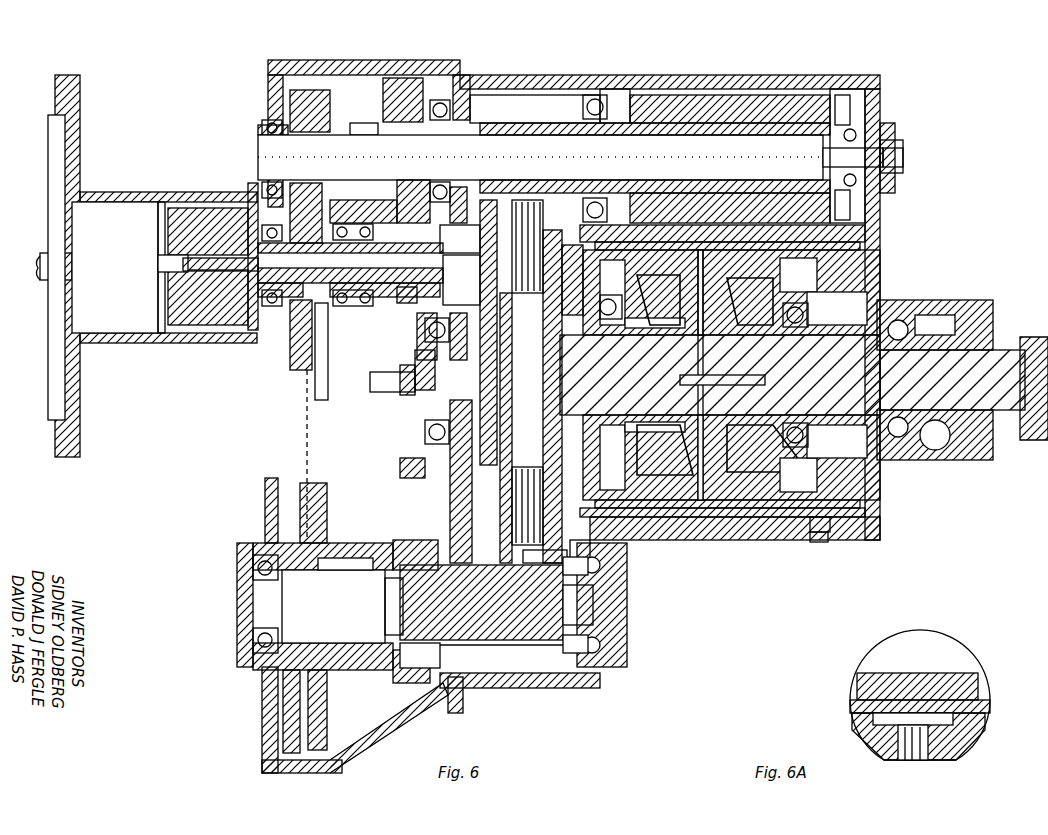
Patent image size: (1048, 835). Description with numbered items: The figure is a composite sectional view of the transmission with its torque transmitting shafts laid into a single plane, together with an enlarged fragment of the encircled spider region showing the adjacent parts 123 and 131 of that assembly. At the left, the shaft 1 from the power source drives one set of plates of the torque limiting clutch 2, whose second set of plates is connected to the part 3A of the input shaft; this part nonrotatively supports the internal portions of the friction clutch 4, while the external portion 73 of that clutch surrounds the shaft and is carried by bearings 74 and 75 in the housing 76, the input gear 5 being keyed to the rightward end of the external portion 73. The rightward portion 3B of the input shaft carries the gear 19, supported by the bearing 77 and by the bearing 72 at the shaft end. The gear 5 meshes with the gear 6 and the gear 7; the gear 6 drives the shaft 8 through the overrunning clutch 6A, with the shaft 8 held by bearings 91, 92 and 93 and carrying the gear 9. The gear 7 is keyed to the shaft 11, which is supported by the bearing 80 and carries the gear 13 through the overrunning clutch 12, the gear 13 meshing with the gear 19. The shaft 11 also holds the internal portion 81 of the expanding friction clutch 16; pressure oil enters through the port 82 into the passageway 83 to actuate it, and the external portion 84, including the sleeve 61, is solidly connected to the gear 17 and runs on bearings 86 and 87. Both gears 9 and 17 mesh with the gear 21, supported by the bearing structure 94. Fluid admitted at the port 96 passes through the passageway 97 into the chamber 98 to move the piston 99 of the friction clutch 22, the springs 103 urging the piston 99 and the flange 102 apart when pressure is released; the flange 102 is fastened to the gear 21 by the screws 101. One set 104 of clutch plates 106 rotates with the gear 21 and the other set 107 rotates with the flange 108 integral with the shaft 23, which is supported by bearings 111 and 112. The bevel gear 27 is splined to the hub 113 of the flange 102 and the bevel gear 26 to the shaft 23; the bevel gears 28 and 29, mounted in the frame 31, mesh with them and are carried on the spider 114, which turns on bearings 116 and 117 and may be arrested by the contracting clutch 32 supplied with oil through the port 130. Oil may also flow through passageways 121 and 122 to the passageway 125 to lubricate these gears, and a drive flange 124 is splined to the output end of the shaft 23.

In FIG. 6, the shaft 1 is at (47, 257).
In FIG. 6, the torque limiting clutch 2 is at (115, 267).
In FIG. 6, the part of the shaft 3 3A is at (160, 259).
In FIG. 6, the friction clutch 4 is at (203, 334).
In FIG. 6, the input gear 5 is at (350, 276).
In FIG. 6, the gear 6 is at (285, 502).
In FIG. 6, the overrunning clutch 6A is at (344, 558).
In FIG. 6, the gear 7 is at (298, 90).
In FIG. 6, the shaft 8 is at (370, 636).
In FIG. 6, the gear 9 is at (510, 643).
In FIG. 6, the shaft 11 is at (257, 152).
In FIG. 6, the overrunning clutch 12 is at (360, 123).
In FIG. 6, the gear 13 is at (390, 81).
In FIG. 6, the friction clutch 16 is at (672, 92).
In FIG. 6, the gear 17 is at (527, 120).
In FIG. 6, the gear 19 is at (268, 120).
In FIG. 6, the gear 21 is at (502, 498).
In FIG. 6, the friction clutch 22 is at (481, 602).
In FIG. 6, the shaft 23 is at (575, 378).
In FIG. 6, the bevel gear 26 is at (768, 350).
In FIG. 6, the bevel gear 27 is at (658, 318).
In FIG. 6, the bevel gear 28 is at (684, 283).
In FIG. 6, the bevel gear 29 is at (731, 461).
In FIG. 6, the frame 31 is at (695, 230).
In FIG. 6, the clutch 32 is at (820, 528).
In FIG. 6A, the clutch 32 is at (973, 727).
In FIG. 6, the sleeve 61 is at (703, 100).
In FIG. 6, the bearing 72 is at (438, 304).
In FIG. 6, the external portion of clutch 4 73 is at (177, 195).
In FIG. 6, the bearing 74 is at (260, 336).
In FIG. 6, the bearing 75 is at (317, 280).
In FIG. 6, the housing 76 is at (328, 60).
In FIG. 6, the bearing 77 is at (380, 267).
In FIG. 6, the bearing 80 is at (882, 123).
In FIG. 6, the internal portion of clutch 16 81 is at (660, 110).
In FIG. 6, the port 82 is at (905, 153).
In FIG. 6, the passageway 83 is at (707, 157).
In FIG. 6, the external portion of clutch 16 84 is at (752, 90).
In FIG. 6, the bearing 86 is at (594, 100).
In FIG. 6, the bearing 87 is at (450, 107).
In FIG. 6, the bearing 91 is at (257, 570).
In FIG. 6, the bearing 92 is at (420, 668).
In FIG. 6, the bearing 93 is at (616, 650).
In FIG. 6, the bearing structure 94 is at (423, 428).
In FIG. 6, the port 96 is at (370, 381).
In FIG. 6, the passageway 97 is at (385, 388).
In FIG. 6, the chamber 98 is at (450, 468).
In FIG. 6, the piston 99 is at (483, 462).
In FIG. 6, the screws 101 is at (525, 560).
In FIG. 6, the flange 102 is at (560, 395).
In FIG. 6, the springs 103 is at (535, 205).
In FIG. 6, the set of clutch plates 104 is at (512, 526).
In FIG. 6, the clutch plates 106 is at (589, 533).
In FIG. 6, the set of clutch plates 107 is at (545, 342).
In FIG. 6, the flange 108 is at (560, 320).
In FIG. 6, the bearing 111 is at (569, 400).
In FIG. 6, the bearing 112 is at (905, 326).
In FIG. 6, the hub 113 is at (575, 418).
In FIG. 6, the spider 114 is at (755, 533).
In FIG. 6A, the spider 114 is at (960, 685).
In FIG. 6, the bearing 116 is at (803, 442).
In FIG. 6, the bearing 117 is at (608, 320).
In FIG. 6, the passageway 121 is at (773, 374).
In FIG. 6, the passageway 122 is at (708, 382).
In FIG. 6, the plate 123 is at (703, 520).
In FIG. 6, the drive flange 124 is at (1035, 440).
In FIG. 6, the passageway 125 is at (772, 258).
In FIG. 6, the port 130 is at (830, 538).
In FIG. 6A, the port 130 is at (916, 762).
In FIG. 6, the plate 131 is at (730, 517).
In FIG. 6A, the plate 131 is at (900, 702).
In FIG. 6, the portion of the shaft 3 3B is at (455, 246).